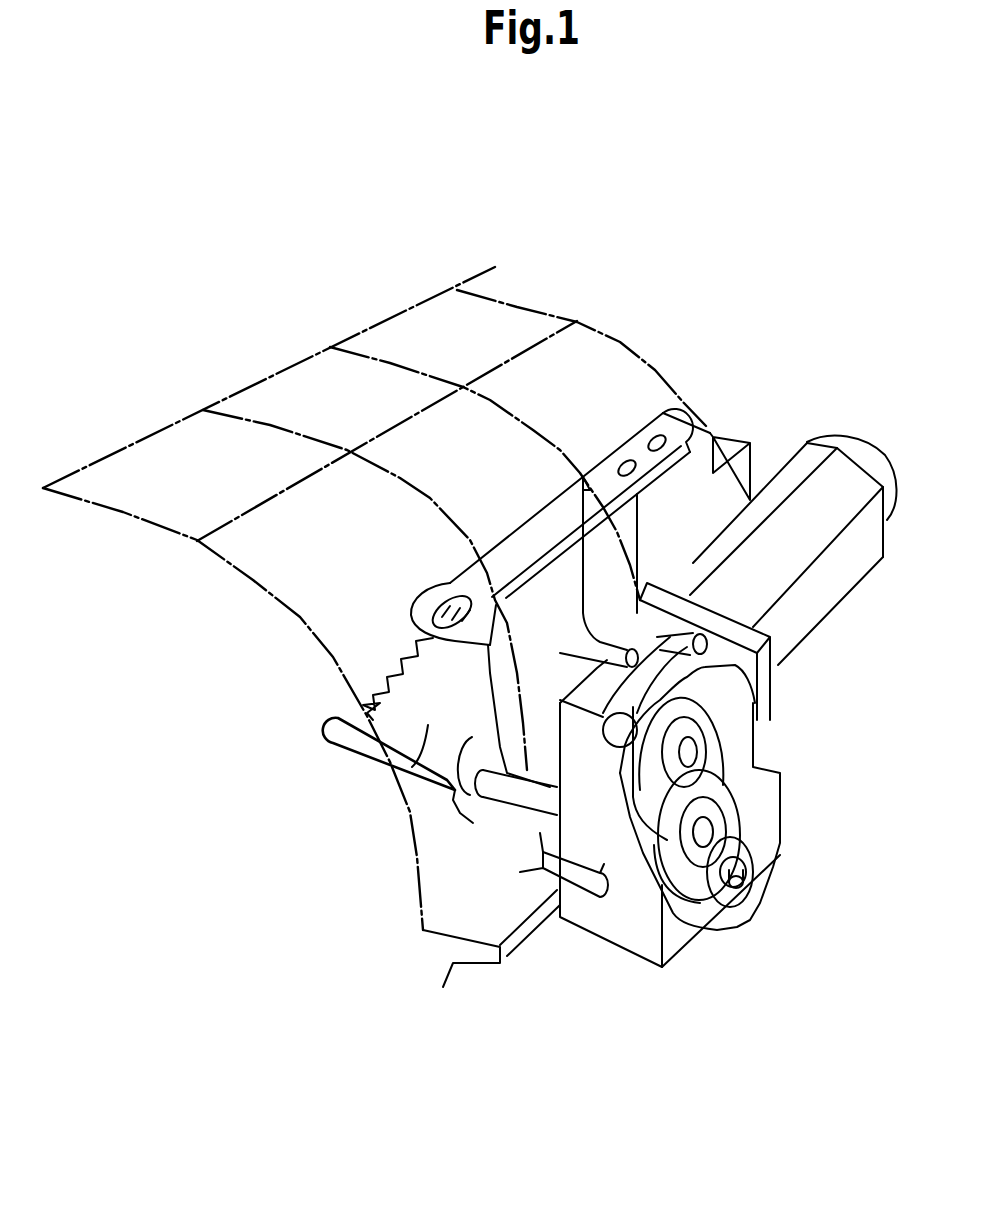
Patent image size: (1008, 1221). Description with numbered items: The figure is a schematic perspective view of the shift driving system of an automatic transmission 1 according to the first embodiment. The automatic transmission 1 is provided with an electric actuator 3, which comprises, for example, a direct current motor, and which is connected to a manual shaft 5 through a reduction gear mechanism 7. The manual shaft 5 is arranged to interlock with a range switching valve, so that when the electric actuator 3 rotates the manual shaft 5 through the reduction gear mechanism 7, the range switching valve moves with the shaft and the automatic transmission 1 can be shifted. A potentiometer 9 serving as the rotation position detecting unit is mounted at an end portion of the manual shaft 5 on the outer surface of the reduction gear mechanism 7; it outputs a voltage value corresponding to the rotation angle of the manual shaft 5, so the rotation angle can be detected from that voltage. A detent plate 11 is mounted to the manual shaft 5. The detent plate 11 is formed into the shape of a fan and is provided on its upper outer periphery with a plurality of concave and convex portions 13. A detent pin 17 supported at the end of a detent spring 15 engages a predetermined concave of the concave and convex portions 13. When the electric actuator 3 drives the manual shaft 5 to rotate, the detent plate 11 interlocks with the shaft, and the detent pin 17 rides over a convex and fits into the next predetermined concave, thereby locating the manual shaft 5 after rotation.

The automatic transmission 1 is at (417, 259).
The electric actuator 3 is at (827, 590).
The manual shaft 5 is at (341, 745).
The reduction gear mechanism 7 is at (607, 920).
The potentiometer 9 is at (740, 882).
The detent plate 11 is at (415, 767).
The concave and convex portions 13 is at (393, 660).
The detent spring 15 is at (520, 541).
The detent pin 17 is at (430, 590).